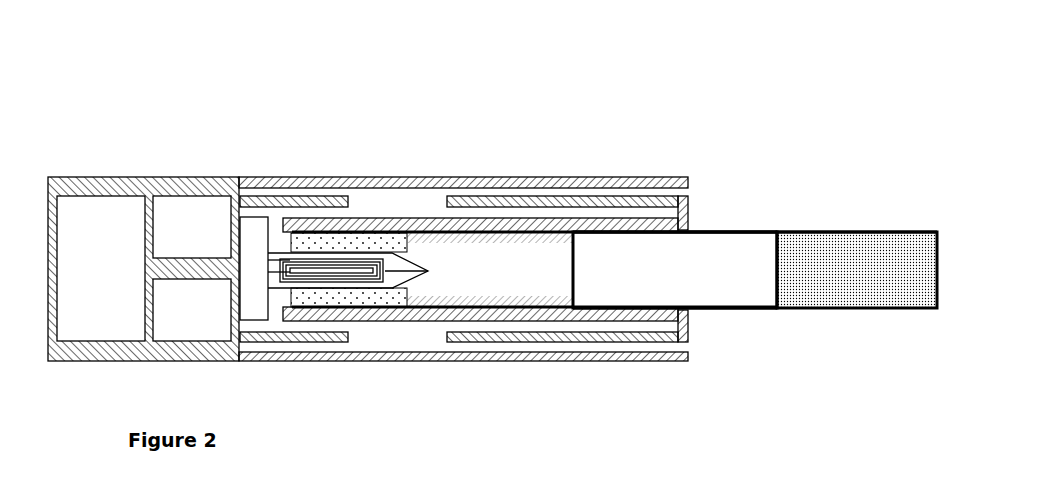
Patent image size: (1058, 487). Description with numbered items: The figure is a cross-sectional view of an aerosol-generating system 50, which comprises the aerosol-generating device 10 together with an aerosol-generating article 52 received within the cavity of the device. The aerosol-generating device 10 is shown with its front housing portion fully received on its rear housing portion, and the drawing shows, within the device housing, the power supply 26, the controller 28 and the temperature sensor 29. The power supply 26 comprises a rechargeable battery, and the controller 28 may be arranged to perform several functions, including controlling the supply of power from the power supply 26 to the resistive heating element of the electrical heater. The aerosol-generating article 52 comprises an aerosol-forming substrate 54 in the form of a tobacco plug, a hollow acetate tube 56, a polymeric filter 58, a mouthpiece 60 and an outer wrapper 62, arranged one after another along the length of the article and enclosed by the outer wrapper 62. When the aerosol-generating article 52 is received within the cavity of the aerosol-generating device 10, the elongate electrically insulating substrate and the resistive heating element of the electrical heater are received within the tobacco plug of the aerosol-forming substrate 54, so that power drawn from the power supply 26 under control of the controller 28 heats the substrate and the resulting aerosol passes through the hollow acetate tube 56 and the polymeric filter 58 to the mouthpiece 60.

The aerosol-generating device 10 is at (107, 177).
The power supply 26 is at (101, 268).
The controller 28 is at (192, 227).
The temperature sensor 29 is at (192, 310).
The aerosol-generating system 50 is at (684, 148).
The aerosol-generating article 52 is at (808, 325).
The aerosol-forming substrate 54 is at (342, 241).
The hollow acetate tube 56 is at (470, 240).
The polymeric filter 58 is at (635, 253).
The mouthpiece 60 is at (823, 257).
The outer wrapper 62 is at (740, 308).